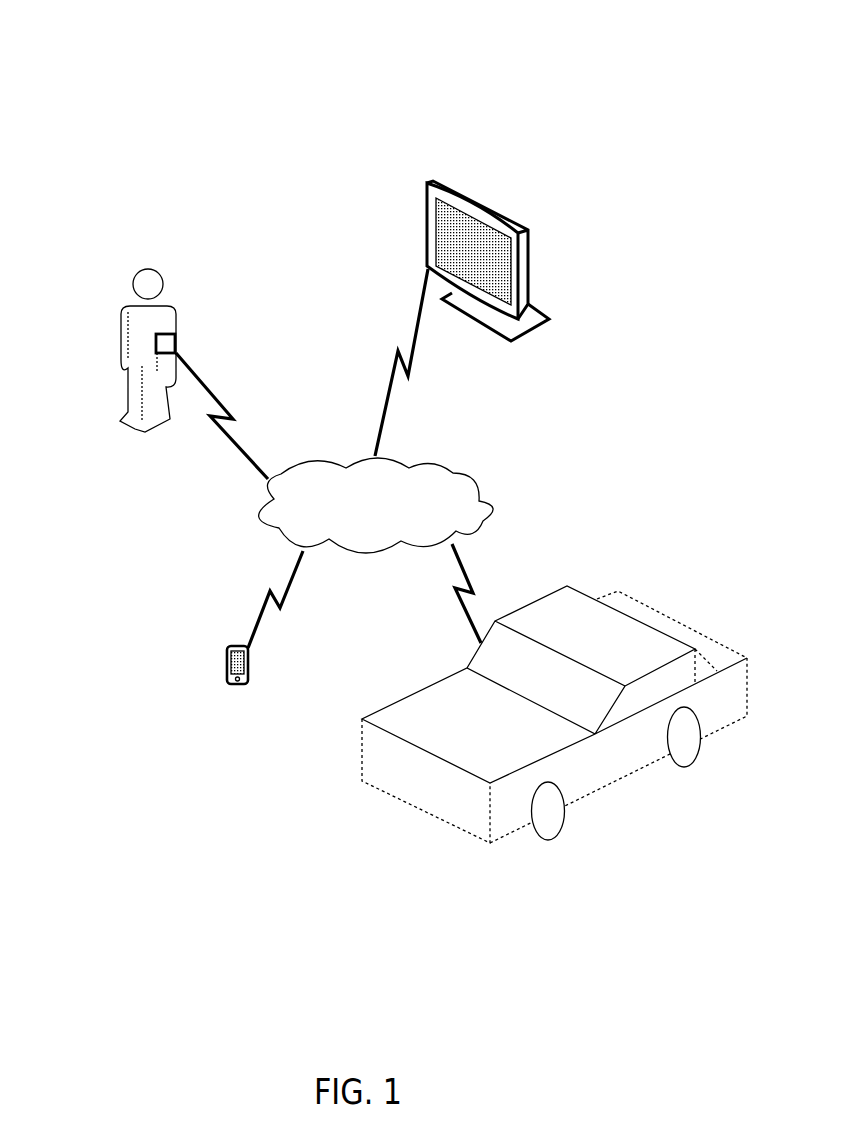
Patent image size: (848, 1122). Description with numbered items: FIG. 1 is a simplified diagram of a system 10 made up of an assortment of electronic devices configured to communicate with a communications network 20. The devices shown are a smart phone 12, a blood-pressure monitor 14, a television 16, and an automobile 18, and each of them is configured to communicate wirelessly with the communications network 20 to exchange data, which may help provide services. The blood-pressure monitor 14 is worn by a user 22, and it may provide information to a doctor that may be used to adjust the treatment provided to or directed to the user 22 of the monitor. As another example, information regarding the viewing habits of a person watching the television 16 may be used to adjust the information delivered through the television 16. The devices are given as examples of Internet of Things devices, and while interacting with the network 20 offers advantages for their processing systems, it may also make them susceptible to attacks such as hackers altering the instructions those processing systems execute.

The system 10 is at (150, 66).
The smart phone 12 is at (227, 655).
The blood-pressure monitor 14 is at (177, 341).
The television 16 is at (472, 192).
The automobile 18 is at (648, 605).
The communications network 20 is at (453, 463).
The user 22 is at (121, 325).